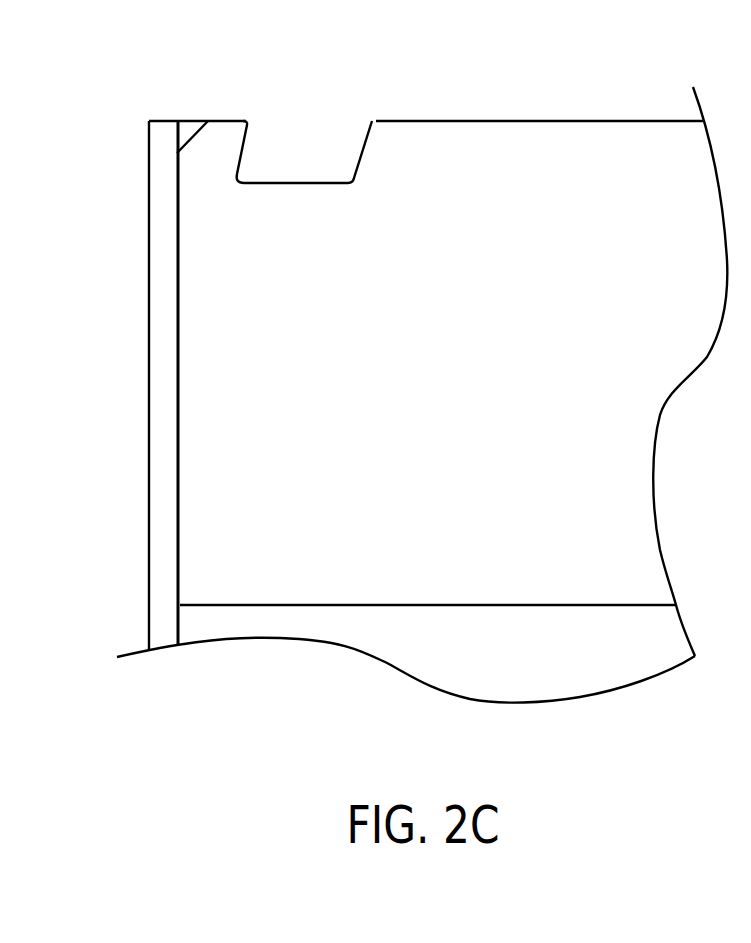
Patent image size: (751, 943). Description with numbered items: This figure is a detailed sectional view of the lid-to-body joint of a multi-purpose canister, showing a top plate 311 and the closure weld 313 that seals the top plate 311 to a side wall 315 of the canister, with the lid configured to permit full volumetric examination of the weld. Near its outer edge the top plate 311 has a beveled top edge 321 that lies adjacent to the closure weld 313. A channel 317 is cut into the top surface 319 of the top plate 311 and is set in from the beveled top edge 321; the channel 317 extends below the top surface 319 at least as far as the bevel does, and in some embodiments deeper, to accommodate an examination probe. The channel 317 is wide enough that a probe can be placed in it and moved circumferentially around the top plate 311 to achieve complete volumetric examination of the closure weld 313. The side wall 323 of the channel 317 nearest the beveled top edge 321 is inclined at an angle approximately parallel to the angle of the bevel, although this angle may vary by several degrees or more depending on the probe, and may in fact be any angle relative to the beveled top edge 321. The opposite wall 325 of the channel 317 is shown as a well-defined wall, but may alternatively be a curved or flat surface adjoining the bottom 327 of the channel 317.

The top plate 311 is at (612, 132).
The closure weld 313 is at (187, 132).
The side wall 315 is at (163, 294).
The channel 317 is at (304, 112).
The top surface 319 is at (496, 120).
The beveled top edge 321 is at (204, 130).
The side wall of the channel 323 is at (241, 153).
The opposite wall 325 is at (370, 133).
The bottom of the channel 327 is at (337, 178).